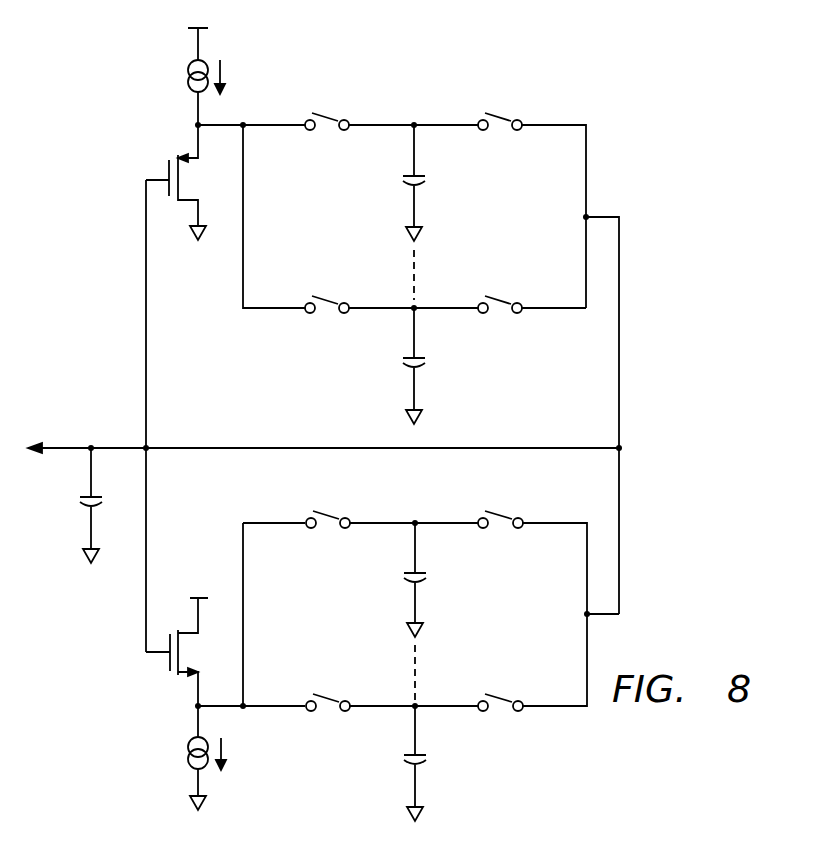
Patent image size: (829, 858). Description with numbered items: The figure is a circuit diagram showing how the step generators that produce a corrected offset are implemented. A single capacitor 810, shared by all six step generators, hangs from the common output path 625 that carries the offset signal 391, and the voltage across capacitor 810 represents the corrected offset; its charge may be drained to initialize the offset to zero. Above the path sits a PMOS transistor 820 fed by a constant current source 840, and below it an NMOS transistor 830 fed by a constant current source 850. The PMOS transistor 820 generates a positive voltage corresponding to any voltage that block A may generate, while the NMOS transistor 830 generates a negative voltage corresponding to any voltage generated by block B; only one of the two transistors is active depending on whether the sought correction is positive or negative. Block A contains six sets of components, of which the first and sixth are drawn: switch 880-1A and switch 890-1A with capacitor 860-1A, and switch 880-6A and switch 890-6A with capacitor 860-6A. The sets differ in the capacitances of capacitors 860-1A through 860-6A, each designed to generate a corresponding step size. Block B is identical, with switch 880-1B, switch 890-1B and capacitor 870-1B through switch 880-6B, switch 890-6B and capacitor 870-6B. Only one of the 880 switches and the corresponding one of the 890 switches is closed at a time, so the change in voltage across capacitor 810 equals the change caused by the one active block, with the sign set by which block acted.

The constant current source 840 is at (187, 72).
The PMOS transistor 820 is at (167, 168).
The NMOS transistor 830 is at (168, 665).
The constant current source 850 is at (187, 758).
The offset output signal 391 is at (60, 446).
The path 625 is at (125, 446).
The capacitor 810 is at (80, 504).
The switch 880-1A is at (327, 113).
The switch 890-1A is at (500, 113).
The capacitor 860-1A is at (428, 178).
The switch 880-6A is at (327, 296).
The switch 890-6A is at (500, 296).
The capacitor 860-6A is at (428, 366).
The switch 880-1B is at (328, 511).
The switch 890-1B is at (500, 511).
The capacitor 870-1B is at (428, 579).
The switch 880-6B is at (328, 694).
The switch 890-6B is at (502, 694).
The capacitor 870-6B is at (430, 762).